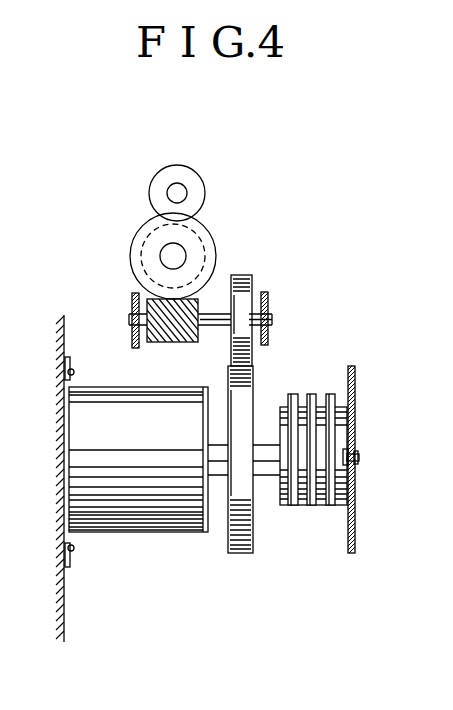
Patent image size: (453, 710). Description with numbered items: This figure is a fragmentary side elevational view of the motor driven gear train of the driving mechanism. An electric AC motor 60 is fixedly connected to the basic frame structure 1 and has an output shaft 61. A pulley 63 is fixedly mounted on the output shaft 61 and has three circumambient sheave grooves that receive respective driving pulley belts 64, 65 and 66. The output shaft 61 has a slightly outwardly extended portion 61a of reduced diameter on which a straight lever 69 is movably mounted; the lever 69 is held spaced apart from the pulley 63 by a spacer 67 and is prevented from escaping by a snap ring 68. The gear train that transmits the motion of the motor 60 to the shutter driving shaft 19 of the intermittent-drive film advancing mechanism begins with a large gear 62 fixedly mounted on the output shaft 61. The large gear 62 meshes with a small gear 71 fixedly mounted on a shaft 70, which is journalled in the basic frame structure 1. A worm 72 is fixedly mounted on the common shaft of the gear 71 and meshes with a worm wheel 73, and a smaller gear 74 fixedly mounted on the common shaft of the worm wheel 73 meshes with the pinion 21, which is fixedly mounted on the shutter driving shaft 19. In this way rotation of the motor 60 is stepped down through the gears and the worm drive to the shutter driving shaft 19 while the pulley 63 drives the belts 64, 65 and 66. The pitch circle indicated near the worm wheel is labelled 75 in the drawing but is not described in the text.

The basic frame structure 1 is at (137, 304).
The shutter driving shaft 19 is at (178, 192).
The pinion 21 is at (206, 189).
The electric AC motor 60 is at (143, 447).
The output shaft 61 is at (217, 478).
The outwardly extended portion 61a is at (359, 462).
The large gear 62 is at (253, 523).
The pulley 63 is at (340, 507).
The driving pulley belt 64 is at (329, 507).
The driving pulley belt 65 is at (308, 507).
The driving pulley belt 66 is at (293, 507).
The spacer 67 is at (352, 442).
The snap ring 68 is at (359, 452).
The straight lever 69 is at (355, 373).
The shaft 70 is at (272, 322).
The small gear 71 is at (252, 279).
The worm 72 is at (173, 334).
The worm wheel 73 is at (178, 257).
The smaller gear 74 is at (197, 243).
The worm wheel 75 is at (216, 265).